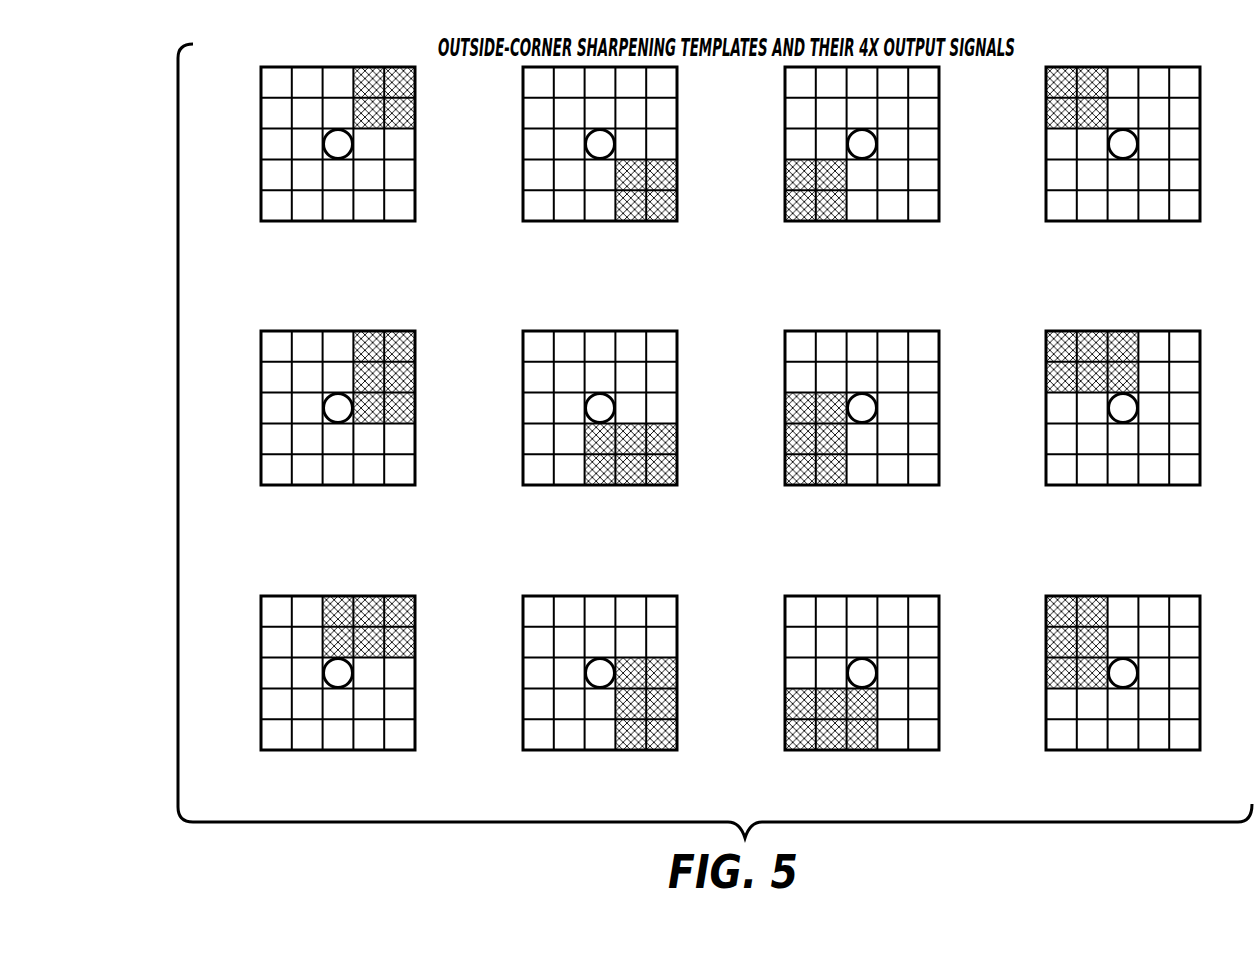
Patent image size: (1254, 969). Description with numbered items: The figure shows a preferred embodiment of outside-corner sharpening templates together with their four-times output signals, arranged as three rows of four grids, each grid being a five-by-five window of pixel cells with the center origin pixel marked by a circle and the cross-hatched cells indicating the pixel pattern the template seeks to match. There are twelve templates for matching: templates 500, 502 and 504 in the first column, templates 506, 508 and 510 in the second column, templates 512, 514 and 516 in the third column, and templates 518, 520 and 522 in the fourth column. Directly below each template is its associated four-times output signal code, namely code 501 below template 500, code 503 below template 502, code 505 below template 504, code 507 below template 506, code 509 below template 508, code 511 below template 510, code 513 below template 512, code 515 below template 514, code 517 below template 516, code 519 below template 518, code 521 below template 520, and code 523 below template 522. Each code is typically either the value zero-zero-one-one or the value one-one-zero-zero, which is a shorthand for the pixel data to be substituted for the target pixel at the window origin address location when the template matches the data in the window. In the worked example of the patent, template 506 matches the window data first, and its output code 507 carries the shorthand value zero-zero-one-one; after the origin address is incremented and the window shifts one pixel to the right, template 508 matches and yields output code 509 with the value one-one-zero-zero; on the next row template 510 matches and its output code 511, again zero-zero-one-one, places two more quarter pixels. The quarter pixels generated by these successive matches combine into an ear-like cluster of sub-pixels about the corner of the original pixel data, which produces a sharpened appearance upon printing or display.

The template 500 is at (309, 144).
The 4× output signal code 501 is at (308, 257).
The template 502 is at (309, 408).
The 4× output signal code 503 is at (308, 516).
The template 504 is at (309, 673).
The 4× output signal code 505 is at (308, 783).
The template 506 is at (571, 144).
The 4× output signal code 507 is at (567, 257).
The template 508 is at (571, 408).
The 4× output signal code 509 is at (567, 518).
The template 510 is at (571, 673).
The 4× output signal code 511 is at (567, 783).
The template 512 is at (833, 144).
The 4× output signal code 513 is at (832, 257).
The template 514 is at (833, 408).
The 4× output signal code 515 is at (831, 518).
The template 516 is at (833, 673).
The 4× output signal code 517 is at (831, 783).
The template 518 is at (1094, 144).
The 4× output signal code 519 is at (1092, 257).
The template 520 is at (1094, 408).
The 4× output signal code 521 is at (1092, 518).
The template 522 is at (1094, 673).
The 4× output signal code 523 is at (1092, 783).